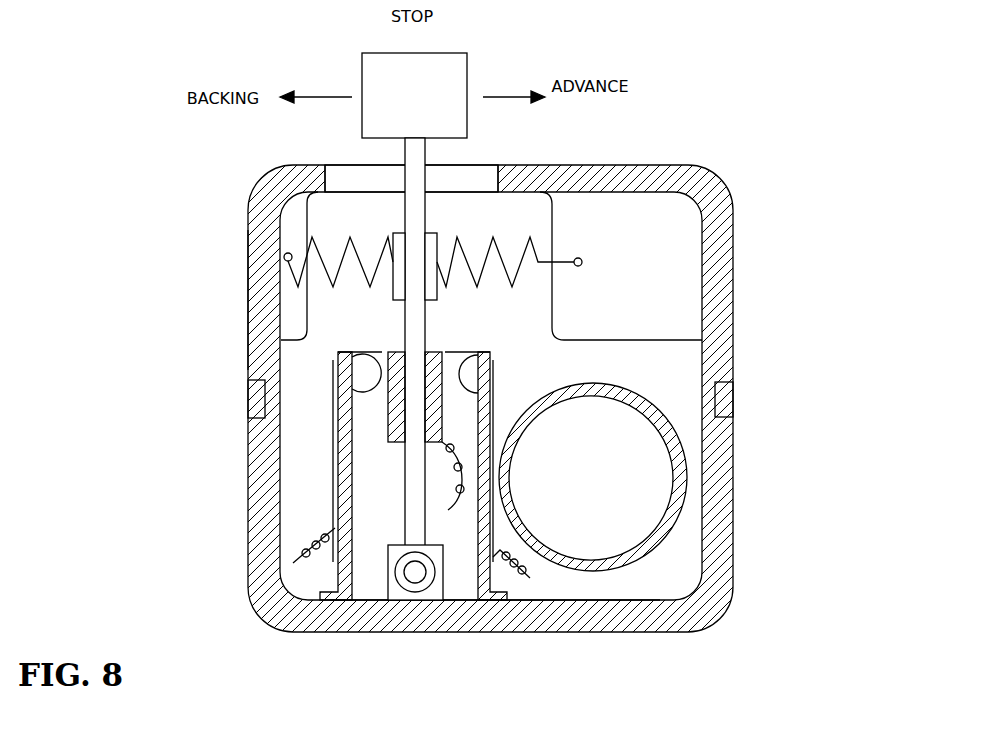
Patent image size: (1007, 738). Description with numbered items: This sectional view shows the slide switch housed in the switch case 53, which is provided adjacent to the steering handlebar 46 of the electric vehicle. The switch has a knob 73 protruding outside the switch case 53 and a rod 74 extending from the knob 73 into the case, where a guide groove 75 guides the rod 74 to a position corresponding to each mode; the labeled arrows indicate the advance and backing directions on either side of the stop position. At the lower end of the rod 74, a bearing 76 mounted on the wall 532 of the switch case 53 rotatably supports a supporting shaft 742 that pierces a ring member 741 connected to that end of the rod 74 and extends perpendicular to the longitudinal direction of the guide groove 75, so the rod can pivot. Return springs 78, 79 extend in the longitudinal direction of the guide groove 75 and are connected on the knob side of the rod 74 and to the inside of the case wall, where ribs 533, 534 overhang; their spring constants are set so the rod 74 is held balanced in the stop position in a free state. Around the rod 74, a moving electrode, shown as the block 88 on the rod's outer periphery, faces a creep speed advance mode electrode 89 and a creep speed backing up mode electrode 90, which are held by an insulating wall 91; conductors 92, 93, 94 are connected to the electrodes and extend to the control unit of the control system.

The steering handlebar 46 is at (633, 560).
The switch case 53 is at (297, 640).
The knob 73 is at (460, 75).
The rod 74 is at (420, 318).
The guide groove 75 is at (346, 182).
The bearing 76 is at (445, 570).
The return spring 78 is at (293, 227).
The return spring 79 is at (480, 243).
The center guide block 88 is at (388, 420).
The creep speed advance mode electrode 89 is at (460, 352).
The creep speed backing up mode electrode 90 is at (367, 352).
The insulating wall 91 is at (352, 478).
The conductor 92 is at (448, 510).
The conductor 93 is at (533, 576).
The conductor 94 is at (330, 533).
The wall 532 is at (580, 633).
The rib 533 is at (607, 220).
The rib 534 is at (248, 218).
The ring member 741 is at (403, 588).
The supporting shaft 742 is at (420, 582).